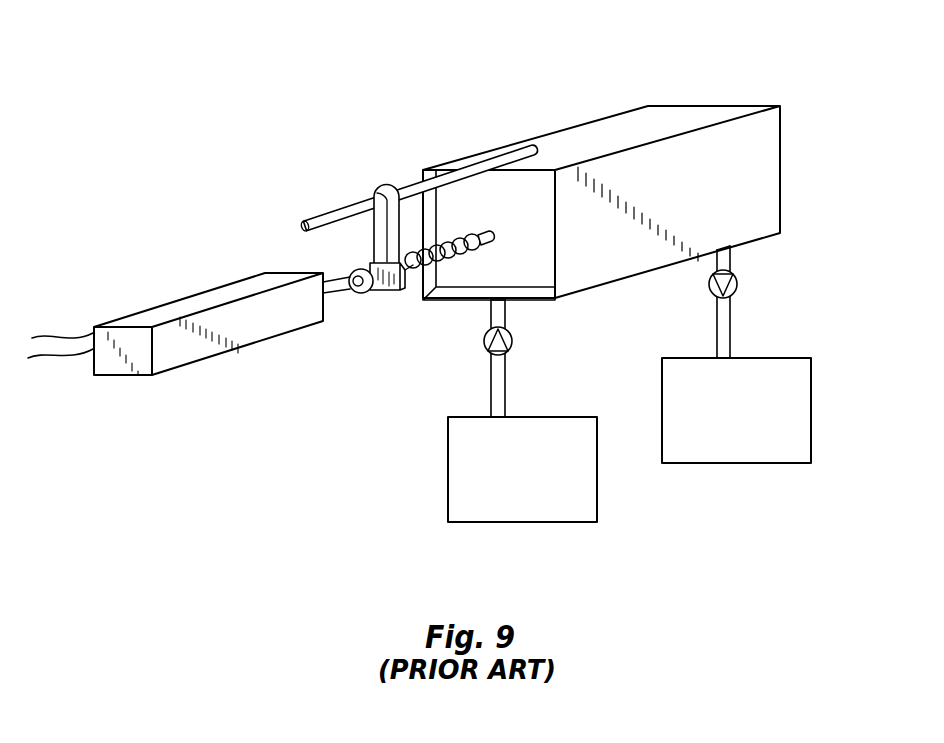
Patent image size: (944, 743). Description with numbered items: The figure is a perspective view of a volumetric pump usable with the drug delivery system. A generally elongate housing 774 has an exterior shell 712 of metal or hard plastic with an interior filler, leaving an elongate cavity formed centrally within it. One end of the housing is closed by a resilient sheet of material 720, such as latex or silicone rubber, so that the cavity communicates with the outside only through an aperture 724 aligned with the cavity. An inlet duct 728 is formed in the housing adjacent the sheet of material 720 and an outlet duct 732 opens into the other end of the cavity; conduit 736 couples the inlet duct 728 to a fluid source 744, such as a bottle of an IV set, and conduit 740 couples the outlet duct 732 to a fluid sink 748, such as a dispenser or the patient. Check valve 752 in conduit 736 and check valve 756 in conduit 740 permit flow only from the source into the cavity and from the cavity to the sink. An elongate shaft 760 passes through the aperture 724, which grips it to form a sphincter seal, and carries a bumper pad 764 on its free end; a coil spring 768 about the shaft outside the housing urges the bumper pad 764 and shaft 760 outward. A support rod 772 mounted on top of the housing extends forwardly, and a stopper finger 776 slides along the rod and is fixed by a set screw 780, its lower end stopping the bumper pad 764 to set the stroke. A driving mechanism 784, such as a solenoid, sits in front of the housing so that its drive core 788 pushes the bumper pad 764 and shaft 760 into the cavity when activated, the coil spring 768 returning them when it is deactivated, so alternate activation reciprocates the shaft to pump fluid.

The exterior shell 712 is at (756, 182).
The resilient sheet of material 720 is at (467, 275).
The aperture 724 is at (493, 239).
The inlet duct 728 is at (490, 302).
The outlet duct 732 is at (713, 254).
The conduit 736 is at (506, 396).
The conduit 740 is at (733, 258).
The fluid source 744 is at (448, 459).
The fluid sink 748 is at (811, 426).
The check valve 752 is at (484, 344).
The check valve 756 is at (738, 287).
The shaft 760 is at (405, 292).
The bumper pad 764 is at (367, 262).
The coil spring 768 is at (465, 228).
The support rod 772 is at (500, 162).
The housing 774 is at (622, 104).
The stopper finger 776 is at (376, 193).
The set screw 780 is at (388, 184).
The driving mechanism 784 is at (173, 350).
The solenoid drive core 788 is at (322, 333).